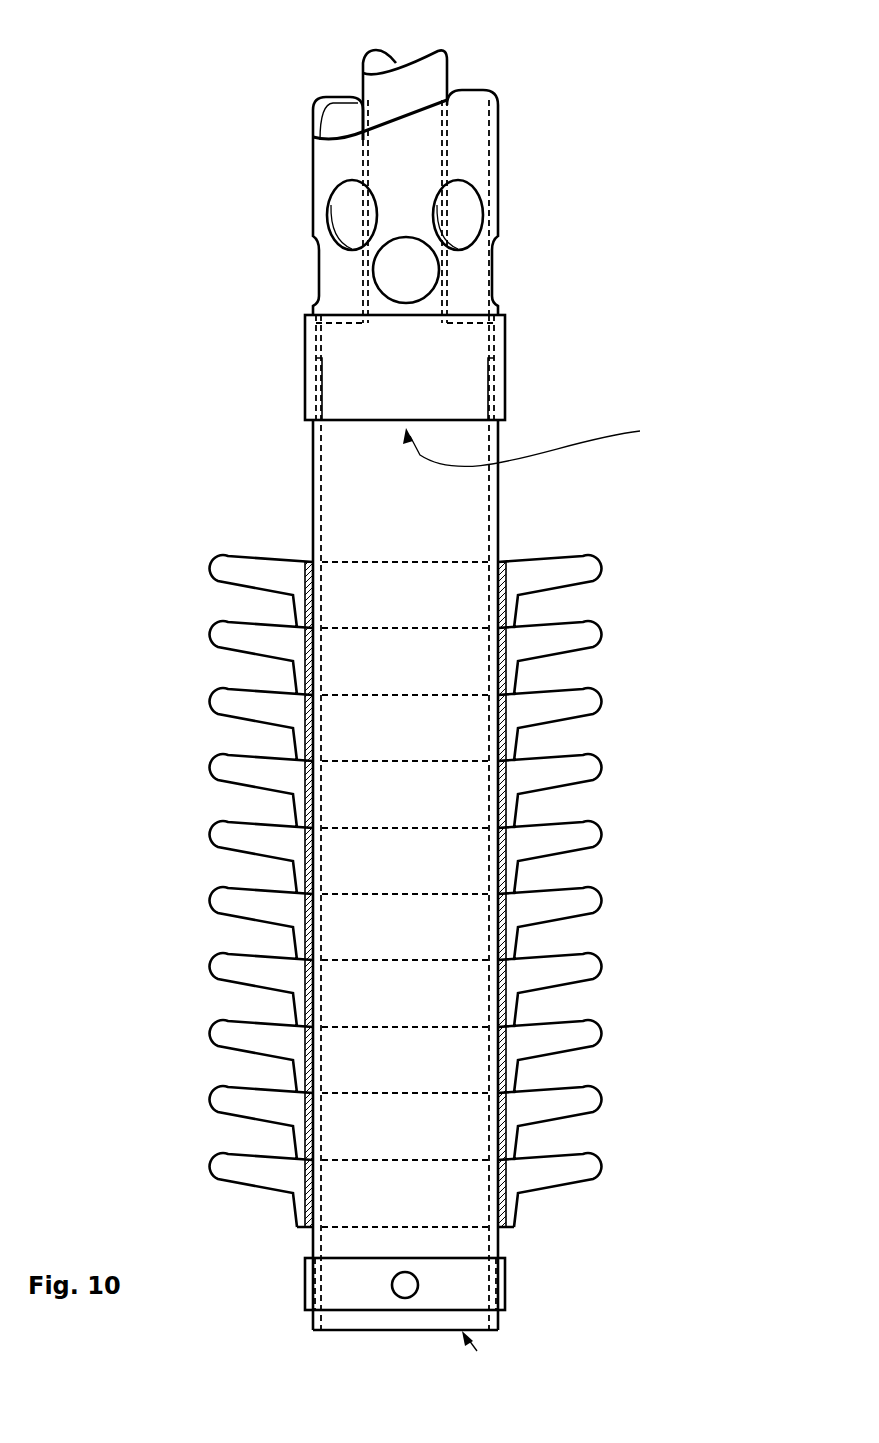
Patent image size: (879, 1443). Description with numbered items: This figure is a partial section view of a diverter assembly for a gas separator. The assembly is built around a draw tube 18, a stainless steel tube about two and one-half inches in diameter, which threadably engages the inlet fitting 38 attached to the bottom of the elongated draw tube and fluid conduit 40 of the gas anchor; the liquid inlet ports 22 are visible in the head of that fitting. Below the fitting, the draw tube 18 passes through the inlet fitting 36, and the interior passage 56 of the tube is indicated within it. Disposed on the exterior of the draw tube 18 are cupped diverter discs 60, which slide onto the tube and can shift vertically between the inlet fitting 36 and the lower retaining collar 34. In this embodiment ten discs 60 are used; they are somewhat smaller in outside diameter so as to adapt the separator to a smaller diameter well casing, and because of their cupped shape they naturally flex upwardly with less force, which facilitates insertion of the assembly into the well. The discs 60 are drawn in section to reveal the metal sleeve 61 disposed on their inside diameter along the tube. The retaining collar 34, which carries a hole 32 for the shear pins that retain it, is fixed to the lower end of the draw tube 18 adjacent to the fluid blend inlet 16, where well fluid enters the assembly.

The fluid blend inlet 16 is at (507, 1349).
The draw tube 18 is at (313, 458).
The liquid inlet ports 22 is at (498, 302).
The mounting hole 32 is at (392, 1285).
The retaining collar 34 is at (505, 1287).
The inlet fitting 36 is at (305, 358).
The inlet fitting 38 is at (313, 173).
The fluid conduit 40 is at (363, 78).
The interior channel 56 is at (536, 443).
The cupped diverter discs 60 is at (207, 825).
The metal sleeve 61 is at (312, 560).